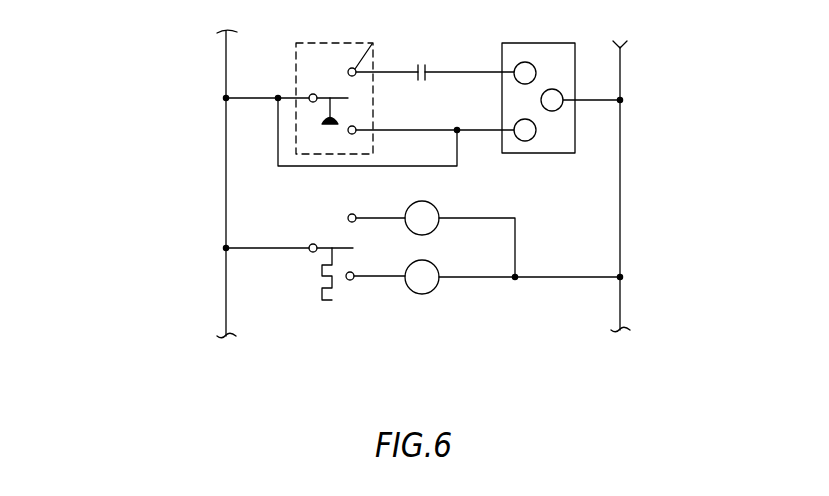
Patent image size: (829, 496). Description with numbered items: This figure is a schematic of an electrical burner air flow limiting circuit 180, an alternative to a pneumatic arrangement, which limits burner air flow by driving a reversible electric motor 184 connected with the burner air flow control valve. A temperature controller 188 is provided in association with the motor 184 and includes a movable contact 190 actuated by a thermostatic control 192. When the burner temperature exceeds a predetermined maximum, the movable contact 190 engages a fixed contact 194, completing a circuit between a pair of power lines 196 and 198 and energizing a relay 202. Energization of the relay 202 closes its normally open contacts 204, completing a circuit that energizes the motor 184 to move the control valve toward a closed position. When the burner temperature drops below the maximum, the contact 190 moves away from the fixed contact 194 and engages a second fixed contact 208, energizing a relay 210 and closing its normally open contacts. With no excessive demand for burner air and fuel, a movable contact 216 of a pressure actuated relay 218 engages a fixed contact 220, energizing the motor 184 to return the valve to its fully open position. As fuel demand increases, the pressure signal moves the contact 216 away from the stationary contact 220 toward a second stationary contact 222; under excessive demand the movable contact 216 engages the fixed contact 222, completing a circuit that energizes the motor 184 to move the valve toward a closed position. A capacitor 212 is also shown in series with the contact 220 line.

The burner air flow limiting circuit 180 is at (133, 212).
The reversible electric motor 184 is at (578, 18).
The temperature controller 188 is at (317, 285).
The movable contact 190 is at (338, 247).
The thermostatic control 192 is at (322, 270).
The fixed contact 194 is at (350, 281).
The power line 196 is at (227, 298).
The power line 198 is at (620, 297).
The relay 202 is at (427, 289).
The normally open contacts 204 is at (423, 167).
The second fixed contact 208 is at (368, 192).
The relay 210 is at (428, 232).
The capacitor 212 is at (448, 50).
The movable contact 216 is at (347, 93).
The pressure actuated relay 218 is at (297, 48).
The fixed contact 220 is at (372, 44).
The second stationary contact 222 is at (352, 134).